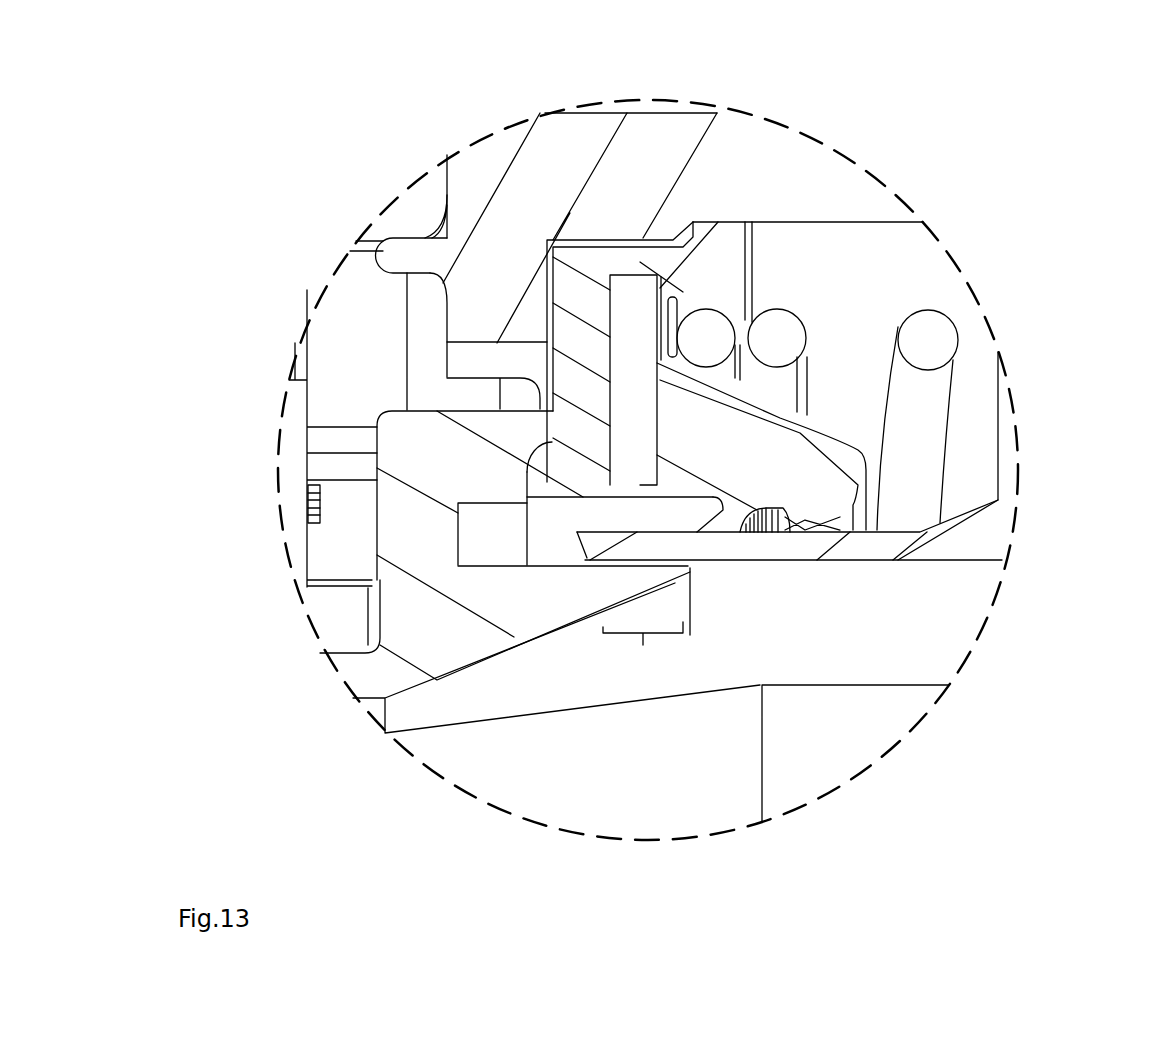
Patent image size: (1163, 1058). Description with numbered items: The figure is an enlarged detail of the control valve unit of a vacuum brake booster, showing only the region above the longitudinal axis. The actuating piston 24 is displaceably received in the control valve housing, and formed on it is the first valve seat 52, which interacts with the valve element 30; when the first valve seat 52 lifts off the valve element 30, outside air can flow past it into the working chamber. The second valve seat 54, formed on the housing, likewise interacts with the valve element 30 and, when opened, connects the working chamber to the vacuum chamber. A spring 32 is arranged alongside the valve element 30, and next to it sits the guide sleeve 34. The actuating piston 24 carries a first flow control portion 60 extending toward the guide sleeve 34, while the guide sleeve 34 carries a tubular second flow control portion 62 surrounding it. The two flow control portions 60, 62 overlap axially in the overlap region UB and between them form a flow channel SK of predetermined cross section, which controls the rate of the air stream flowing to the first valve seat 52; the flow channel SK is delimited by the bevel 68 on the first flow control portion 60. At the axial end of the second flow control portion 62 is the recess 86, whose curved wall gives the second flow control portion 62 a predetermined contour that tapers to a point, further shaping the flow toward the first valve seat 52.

The actuating piston 24 is at (415, 615).
The valve element 30 is at (603, 263).
The spring 32 is at (938, 343).
The guide sleeve 34 is at (977, 537).
The first valve seat 52 is at (547, 435).
The second valve seat 54 is at (550, 323).
The first flow control portion 60 is at (675, 583).
The second flow control portion 62 is at (792, 542).
The bevel 68 is at (688, 572).
The recess 86 is at (577, 533).
The flow channel SK is at (615, 580).
The overlap region UB is at (643, 652).